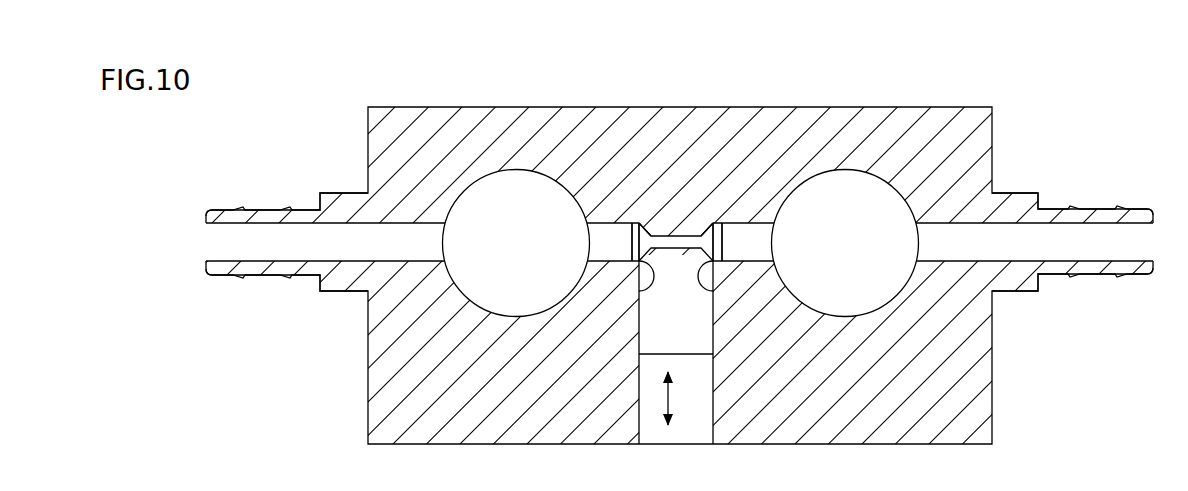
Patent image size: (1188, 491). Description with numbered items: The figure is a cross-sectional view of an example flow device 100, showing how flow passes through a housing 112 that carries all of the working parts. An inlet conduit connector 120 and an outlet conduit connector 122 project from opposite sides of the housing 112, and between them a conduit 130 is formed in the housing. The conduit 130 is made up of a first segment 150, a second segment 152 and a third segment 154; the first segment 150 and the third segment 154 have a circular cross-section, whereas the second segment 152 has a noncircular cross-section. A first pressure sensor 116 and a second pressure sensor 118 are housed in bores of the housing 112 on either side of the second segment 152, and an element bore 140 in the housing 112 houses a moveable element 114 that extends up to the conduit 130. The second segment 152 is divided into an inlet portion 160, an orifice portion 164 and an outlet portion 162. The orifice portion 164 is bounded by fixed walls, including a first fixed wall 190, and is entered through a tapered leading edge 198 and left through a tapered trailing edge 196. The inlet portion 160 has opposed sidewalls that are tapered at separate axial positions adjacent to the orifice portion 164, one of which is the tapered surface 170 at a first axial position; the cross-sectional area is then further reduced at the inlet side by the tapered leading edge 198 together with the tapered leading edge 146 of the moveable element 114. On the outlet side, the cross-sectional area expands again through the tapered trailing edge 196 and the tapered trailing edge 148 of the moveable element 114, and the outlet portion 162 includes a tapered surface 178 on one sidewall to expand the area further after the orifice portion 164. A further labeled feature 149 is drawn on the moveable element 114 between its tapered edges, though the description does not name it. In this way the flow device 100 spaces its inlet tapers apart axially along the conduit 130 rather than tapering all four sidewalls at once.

The flow device 100 is at (1080, 82).
The housing 112 is at (995, 398).
The moveable element 114 is at (685, 335).
The first pressure sensor 116 is at (865, 187).
The second pressure sensor 118 is at (532, 187).
The inlet conduit connector 120 is at (1018, 192).
The outlet conduit connector 122 is at (347, 193).
The conduit 130 is at (947, 232).
The element bore 140 is at (640, 412).
The tapered leading edge of movable element 146 is at (642, 282).
The tapered trailing edge of movable element 148 is at (712, 280).
The neck lower wall 149 is at (677, 252).
The first segment 150 is at (413, 203).
The second segment 152 is at (728, 147).
The third segment 154 is at (947, 278).
The inlet portion 160 is at (605, 212).
The outlet portion 162 is at (765, 210).
The orifice portion 164 is at (692, 197).
The tapered surface 170 is at (635, 226).
The tapered surface 178 is at (720, 225).
The first fixed wall 190 is at (660, 233).
The tapered trailing edge 196 is at (705, 234).
The tapered leading edge 198 is at (638, 224).